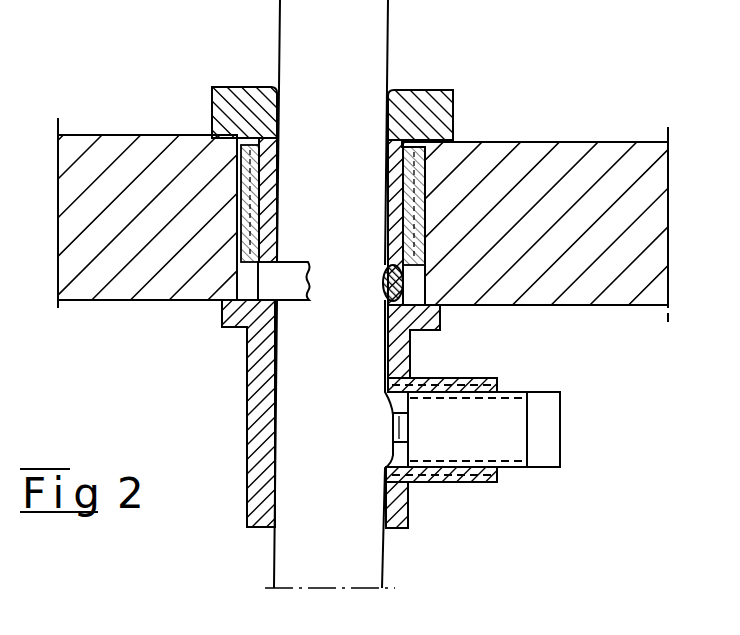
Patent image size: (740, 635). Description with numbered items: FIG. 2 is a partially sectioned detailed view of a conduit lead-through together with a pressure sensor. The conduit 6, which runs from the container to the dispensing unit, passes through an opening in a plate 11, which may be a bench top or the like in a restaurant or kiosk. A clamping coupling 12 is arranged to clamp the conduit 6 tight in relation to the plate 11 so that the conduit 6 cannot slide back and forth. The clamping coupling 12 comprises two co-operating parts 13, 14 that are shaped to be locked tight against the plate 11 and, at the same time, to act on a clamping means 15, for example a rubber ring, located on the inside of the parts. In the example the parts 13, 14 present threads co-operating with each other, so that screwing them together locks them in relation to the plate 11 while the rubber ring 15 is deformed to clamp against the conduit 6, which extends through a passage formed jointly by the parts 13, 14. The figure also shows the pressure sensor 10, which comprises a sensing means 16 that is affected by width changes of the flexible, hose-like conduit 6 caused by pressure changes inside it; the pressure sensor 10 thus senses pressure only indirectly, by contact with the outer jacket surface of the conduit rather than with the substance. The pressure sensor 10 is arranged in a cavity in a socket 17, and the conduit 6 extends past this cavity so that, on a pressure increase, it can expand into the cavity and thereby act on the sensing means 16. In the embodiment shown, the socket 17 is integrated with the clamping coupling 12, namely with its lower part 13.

The conduit 6 is at (280, 37).
The pressure sensor 10 is at (500, 442).
The plate 11 is at (560, 160).
The clamping coupling 12 is at (428, 90).
The lower part 13 is at (258, 402).
The part 14 is at (230, 108).
The clamping means 15 is at (383, 268).
The sensing means 16 is at (400, 447).
The socket 17 is at (463, 370).